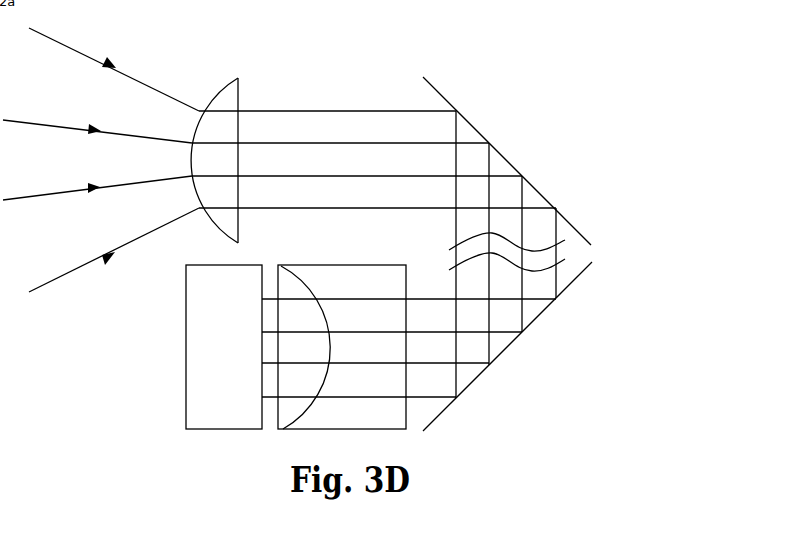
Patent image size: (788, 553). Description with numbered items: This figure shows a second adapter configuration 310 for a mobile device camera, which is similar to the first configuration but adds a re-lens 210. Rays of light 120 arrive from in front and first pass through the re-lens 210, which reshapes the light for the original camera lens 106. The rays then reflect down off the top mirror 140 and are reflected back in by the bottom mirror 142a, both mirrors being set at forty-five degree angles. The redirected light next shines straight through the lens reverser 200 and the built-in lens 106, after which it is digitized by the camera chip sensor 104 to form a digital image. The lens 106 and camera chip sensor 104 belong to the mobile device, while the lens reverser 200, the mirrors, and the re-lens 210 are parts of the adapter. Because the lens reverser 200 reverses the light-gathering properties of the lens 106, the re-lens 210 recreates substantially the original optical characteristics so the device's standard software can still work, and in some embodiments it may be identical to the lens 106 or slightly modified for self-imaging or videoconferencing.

The rays of light 120 is at (80, 53).
The re-lens 210 is at (240, 88).
The top mirror 140 is at (510, 160).
The bottom mirror 142a is at (500, 357).
The camera chip sensor 104 is at (218, 265).
The lens reverser 200 is at (380, 265).
The lens 106 is at (283, 267).
The second adapter configuration 310 is at (503, 59).